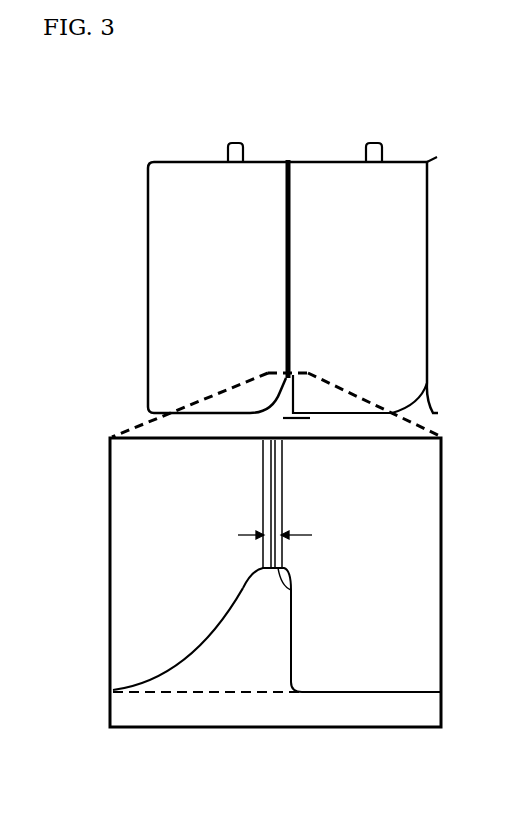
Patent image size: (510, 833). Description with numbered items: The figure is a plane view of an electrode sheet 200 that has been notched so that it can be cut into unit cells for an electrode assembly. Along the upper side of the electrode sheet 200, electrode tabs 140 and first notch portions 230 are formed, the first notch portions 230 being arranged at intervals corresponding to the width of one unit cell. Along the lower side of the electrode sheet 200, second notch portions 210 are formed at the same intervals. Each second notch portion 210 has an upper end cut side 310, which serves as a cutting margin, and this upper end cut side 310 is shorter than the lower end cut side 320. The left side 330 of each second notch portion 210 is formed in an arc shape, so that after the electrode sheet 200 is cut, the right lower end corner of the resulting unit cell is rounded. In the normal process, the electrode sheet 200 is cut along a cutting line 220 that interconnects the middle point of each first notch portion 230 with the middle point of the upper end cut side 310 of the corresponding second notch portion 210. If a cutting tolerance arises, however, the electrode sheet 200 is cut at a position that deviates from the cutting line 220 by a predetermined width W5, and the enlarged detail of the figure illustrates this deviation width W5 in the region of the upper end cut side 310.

The electrode sheet 200 is at (98, 141).
The electrode tab 140 is at (232, 142).
The cutting line 220 is at (291, 288).
The first notch portion 230 is at (287, 159).
The predetermined width W5 is at (283, 532).
The upper end cut side 310 is at (312, 598).
The second notch portion 210 is at (262, 619).
The left side of second notch portion 330 is at (197, 650).
The lower end cut side 320 is at (203, 694).